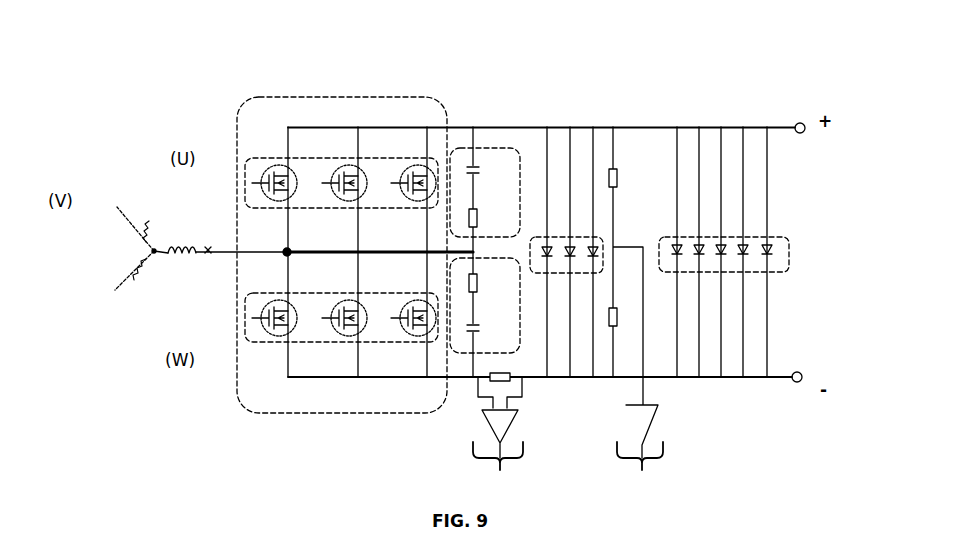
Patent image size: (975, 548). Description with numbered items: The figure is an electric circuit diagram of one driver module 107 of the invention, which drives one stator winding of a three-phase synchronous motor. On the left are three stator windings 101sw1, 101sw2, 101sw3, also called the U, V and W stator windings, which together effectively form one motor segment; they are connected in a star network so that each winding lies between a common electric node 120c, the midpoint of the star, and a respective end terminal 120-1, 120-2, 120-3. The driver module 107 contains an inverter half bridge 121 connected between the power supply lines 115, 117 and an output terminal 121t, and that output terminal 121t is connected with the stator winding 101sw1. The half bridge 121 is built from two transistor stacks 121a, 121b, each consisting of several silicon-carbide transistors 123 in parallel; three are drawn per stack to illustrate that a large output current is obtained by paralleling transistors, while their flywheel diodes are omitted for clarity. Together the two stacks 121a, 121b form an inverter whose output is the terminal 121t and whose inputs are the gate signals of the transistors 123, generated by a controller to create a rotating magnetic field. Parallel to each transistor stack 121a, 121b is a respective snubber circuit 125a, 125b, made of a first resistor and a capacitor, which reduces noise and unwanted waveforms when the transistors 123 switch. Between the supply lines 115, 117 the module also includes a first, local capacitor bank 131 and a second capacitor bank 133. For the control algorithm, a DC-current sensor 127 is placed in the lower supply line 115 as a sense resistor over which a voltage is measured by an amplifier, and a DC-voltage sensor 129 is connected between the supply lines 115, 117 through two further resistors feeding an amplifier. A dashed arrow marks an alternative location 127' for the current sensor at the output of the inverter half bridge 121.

The driver module 107 is at (766, 72).
The second power supply line 115 is at (733, 380).
The second power supply line 117 is at (707, 127).
The inverter half bridge 121 is at (238, 381).
The transistor stack 121a is at (274, 167).
The transistor stack 121b is at (263, 343).
The output terminal 121t is at (378, 243).
The silicon-carbide transistor 123 is at (405, 172).
The snubber circuit 125a is at (505, 148).
The snubber circuit 125b is at (520, 313).
The DC-current sensor 127 is at (498, 427).
The alternative location for the AC current sensor 127' is at (253, 140).
The DC-voltage sensor 129 is at (636, 313).
The first capacitor bank 131 is at (578, 240).
The second capacitor bank 133 is at (776, 241).
The stator winding 101sw1 is at (190, 250).
The stator winding 101sw2 is at (152, 250).
The stator winding 101sw3 is at (140, 272).
The end terminal 120-1 is at (220, 241).
The end terminal 120-2 is at (119, 220).
The end terminal 120-3 is at (114, 281).
The common electric node 120c is at (153, 250).